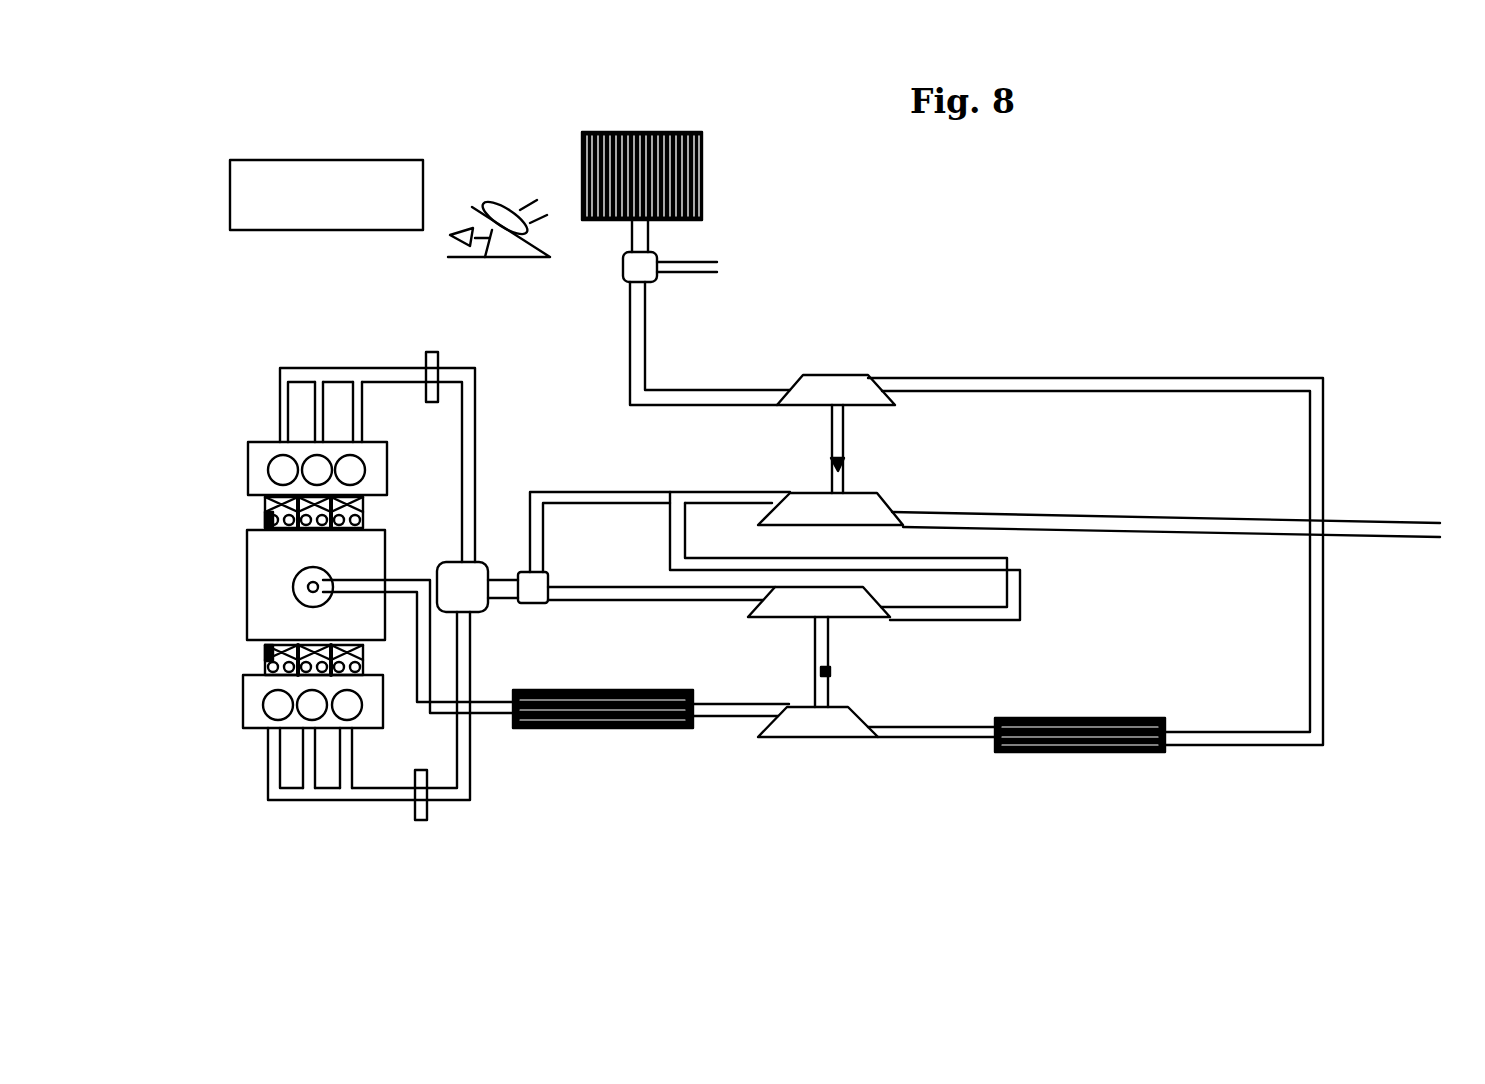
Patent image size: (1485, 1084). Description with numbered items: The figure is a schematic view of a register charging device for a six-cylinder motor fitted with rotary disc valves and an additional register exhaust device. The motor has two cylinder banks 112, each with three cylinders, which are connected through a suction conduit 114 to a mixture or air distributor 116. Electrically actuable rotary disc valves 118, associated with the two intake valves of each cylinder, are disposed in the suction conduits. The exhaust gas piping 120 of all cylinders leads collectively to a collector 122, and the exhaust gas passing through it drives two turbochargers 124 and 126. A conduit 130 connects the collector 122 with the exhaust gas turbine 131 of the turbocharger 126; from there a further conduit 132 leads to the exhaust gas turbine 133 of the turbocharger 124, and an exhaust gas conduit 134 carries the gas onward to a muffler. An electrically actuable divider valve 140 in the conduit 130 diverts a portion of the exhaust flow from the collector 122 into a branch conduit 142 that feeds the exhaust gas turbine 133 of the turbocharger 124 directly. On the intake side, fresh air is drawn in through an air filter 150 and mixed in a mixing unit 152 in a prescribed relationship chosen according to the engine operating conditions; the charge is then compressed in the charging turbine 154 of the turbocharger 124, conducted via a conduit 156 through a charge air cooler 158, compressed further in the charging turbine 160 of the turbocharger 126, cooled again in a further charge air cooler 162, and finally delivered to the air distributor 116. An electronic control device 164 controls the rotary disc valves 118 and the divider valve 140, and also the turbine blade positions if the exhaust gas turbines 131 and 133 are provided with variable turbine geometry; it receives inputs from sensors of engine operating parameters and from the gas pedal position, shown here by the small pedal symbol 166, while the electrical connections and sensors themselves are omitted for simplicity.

The cylinder bank 112 is at (303, 450).
The suction conduit 114 is at (250, 530).
The mixture or air distributor 116 is at (273, 562).
The rotary disc valve 118 is at (277, 497).
The exhaust gas piping 120 is at (287, 373).
The collector 122 is at (465, 580).
The turbocharger 124 is at (875, 447).
The turbocharger 126 is at (862, 655).
The conduit 130 is at (628, 590).
The exhaust gas turbine 131 is at (783, 605).
The further conduit 132 is at (1020, 590).
The exhaust gas turbine 133 is at (870, 513).
The exhaust gas conduit 134 is at (1100, 525).
The divider valve 140 is at (532, 605).
The branch conduit 142 is at (595, 495).
The air filter 150 is at (700, 162).
The mixing unit 152 is at (650, 265).
The charging turbine 154 is at (835, 385).
The conduit 156 is at (1212, 385).
The charge air cooler 158 is at (1110, 755).
The charging turbine 160 is at (822, 725).
The charge air cooler 162 is at (588, 730).
The electronic control device 164 is at (310, 192).
The aircraft symbol 166 is at (510, 245).